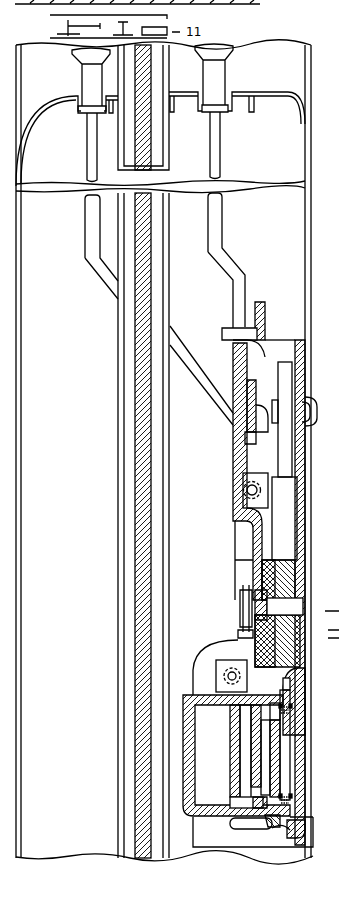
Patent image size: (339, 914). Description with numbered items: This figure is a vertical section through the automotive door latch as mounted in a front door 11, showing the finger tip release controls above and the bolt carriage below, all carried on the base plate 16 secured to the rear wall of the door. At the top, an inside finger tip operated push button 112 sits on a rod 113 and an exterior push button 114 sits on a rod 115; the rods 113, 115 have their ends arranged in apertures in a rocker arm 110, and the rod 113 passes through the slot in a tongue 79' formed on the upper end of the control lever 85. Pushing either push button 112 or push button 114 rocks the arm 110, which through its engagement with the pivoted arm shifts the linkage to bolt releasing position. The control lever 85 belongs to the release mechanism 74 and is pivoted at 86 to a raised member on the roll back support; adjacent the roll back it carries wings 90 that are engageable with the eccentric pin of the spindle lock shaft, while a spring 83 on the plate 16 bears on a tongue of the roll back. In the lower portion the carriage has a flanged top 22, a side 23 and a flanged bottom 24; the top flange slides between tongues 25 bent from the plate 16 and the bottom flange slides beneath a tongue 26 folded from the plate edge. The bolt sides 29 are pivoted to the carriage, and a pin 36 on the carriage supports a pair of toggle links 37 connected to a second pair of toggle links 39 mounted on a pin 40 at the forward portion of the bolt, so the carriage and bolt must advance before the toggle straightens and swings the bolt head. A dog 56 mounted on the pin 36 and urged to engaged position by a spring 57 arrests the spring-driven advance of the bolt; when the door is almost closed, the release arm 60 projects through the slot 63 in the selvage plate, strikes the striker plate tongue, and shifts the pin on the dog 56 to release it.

The front door 11 is at (306, 142).
The base plate 16 is at (300, 347).
The flanged top 22 is at (291, 683).
The side 23 is at (190, 738).
The flanged bottom 24 is at (295, 830).
The tongues 25 is at (283, 686).
The tongue 26 is at (278, 830).
The sides 29 is at (232, 802).
The pin 36 is at (284, 773).
The toggle links 37 is at (292, 726).
The toggle links 39 is at (231, 778).
The pin 40 is at (242, 763).
The dog 56 is at (295, 758).
The spring 57 is at (289, 709).
The release arm 60 is at (270, 823).
The slot 63 is at (242, 832).
The release mechanism 74 is at (290, 500).
The tongue 79' is at (227, 321).
The spring 83 is at (286, 378).
The control lever 85 is at (258, 538).
The pivot 86 is at (301, 603).
The wings 90 is at (240, 636).
The rocker arm 110 is at (248, 428).
The inside push button 112 is at (224, 68).
The rod 113 is at (219, 212).
The outside push button 114 is at (84, 66).
The rod 115 is at (88, 147).